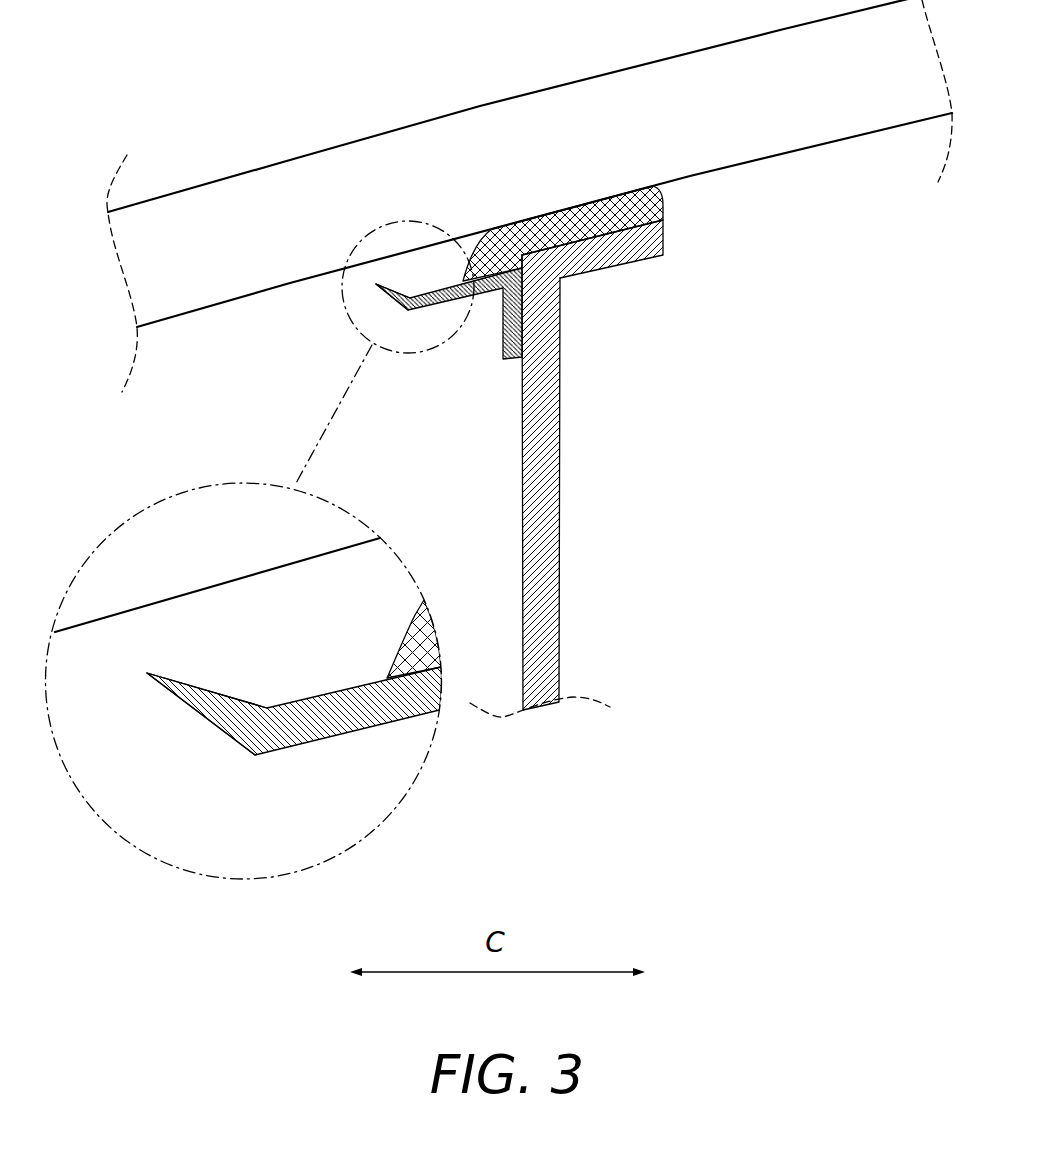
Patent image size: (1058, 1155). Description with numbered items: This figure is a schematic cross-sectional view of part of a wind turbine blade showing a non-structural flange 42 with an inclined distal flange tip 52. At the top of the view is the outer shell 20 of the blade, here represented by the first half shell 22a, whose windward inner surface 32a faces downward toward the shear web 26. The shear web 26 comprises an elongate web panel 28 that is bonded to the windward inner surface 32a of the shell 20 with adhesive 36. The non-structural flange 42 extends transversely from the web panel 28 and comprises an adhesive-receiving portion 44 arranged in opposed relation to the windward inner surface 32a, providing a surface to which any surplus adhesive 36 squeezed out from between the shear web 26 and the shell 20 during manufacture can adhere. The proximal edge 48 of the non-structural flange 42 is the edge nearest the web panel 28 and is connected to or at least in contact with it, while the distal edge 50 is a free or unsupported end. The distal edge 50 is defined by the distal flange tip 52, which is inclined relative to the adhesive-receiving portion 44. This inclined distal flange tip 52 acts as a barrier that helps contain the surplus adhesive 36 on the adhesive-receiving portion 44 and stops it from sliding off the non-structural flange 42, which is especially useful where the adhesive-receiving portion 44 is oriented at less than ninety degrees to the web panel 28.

The outer shell 20 is at (503, 324).
The first half shell 22a is at (557, 102).
The windward inner surface 32a is at (237, 302).
The shear web 26 is at (555, 468).
The web panel 28 is at (545, 568).
The non-structural flange 42 is at (468, 354).
The adhesive-receiving portion 44 is at (445, 305).
The adhesive 36 is at (662, 200).
The proximal edge 48 is at (522, 218).
The distal edge 50 is at (375, 284).
The distal flange tip 52 is at (413, 263).